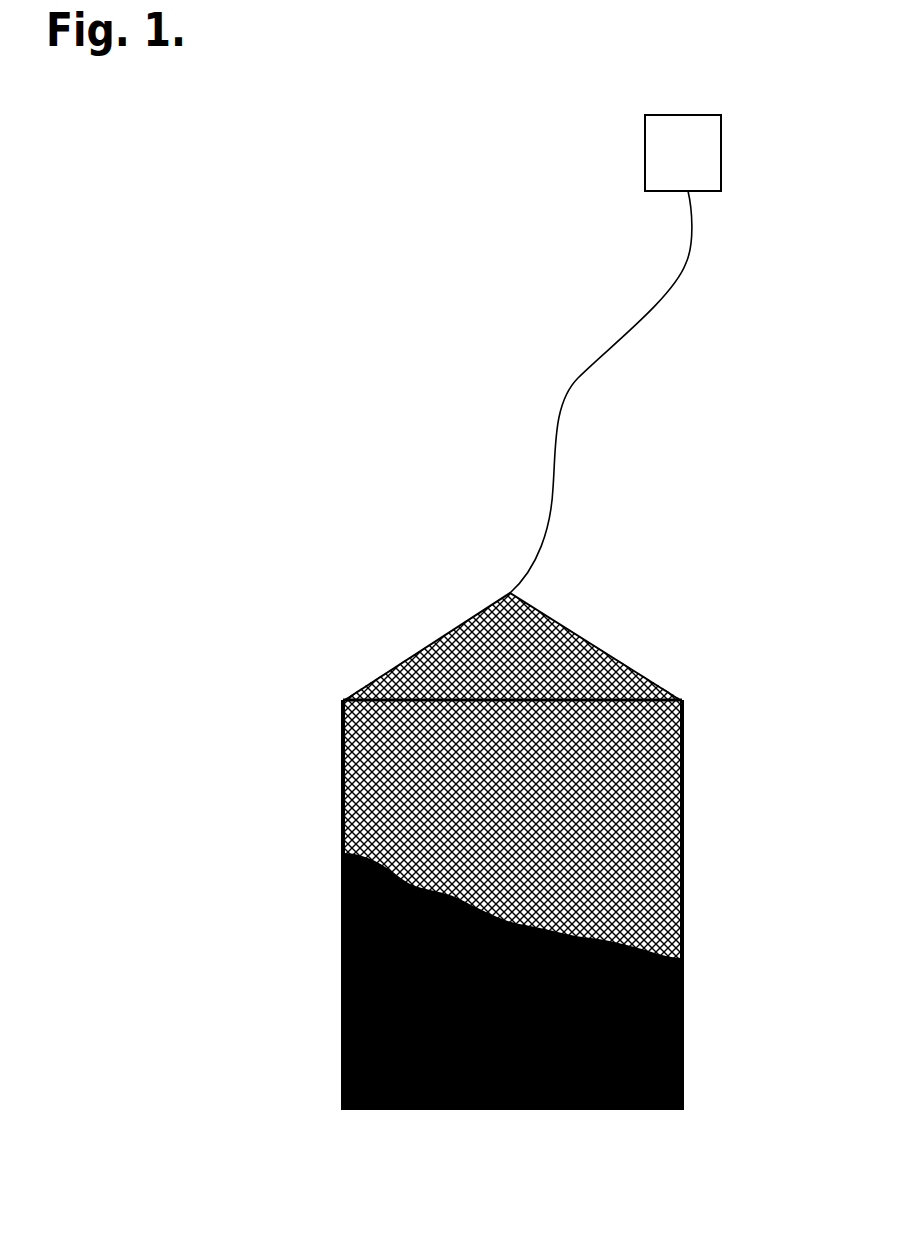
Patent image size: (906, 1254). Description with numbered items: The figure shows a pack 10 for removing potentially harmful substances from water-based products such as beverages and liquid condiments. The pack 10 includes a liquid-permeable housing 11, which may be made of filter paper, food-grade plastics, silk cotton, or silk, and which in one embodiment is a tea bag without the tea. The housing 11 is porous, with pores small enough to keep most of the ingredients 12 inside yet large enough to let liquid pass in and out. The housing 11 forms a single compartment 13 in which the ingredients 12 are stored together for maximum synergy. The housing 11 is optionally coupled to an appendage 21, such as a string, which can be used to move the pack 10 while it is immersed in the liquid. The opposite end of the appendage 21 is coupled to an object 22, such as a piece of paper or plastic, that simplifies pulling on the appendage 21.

The pack 10 is at (139, 92).
The liquid-permeable housing 11 is at (673, 692).
The ingredients 12 is at (620, 925).
The compartment 13 is at (636, 822).
The appendage 21 is at (544, 497).
The object 22 is at (713, 143).